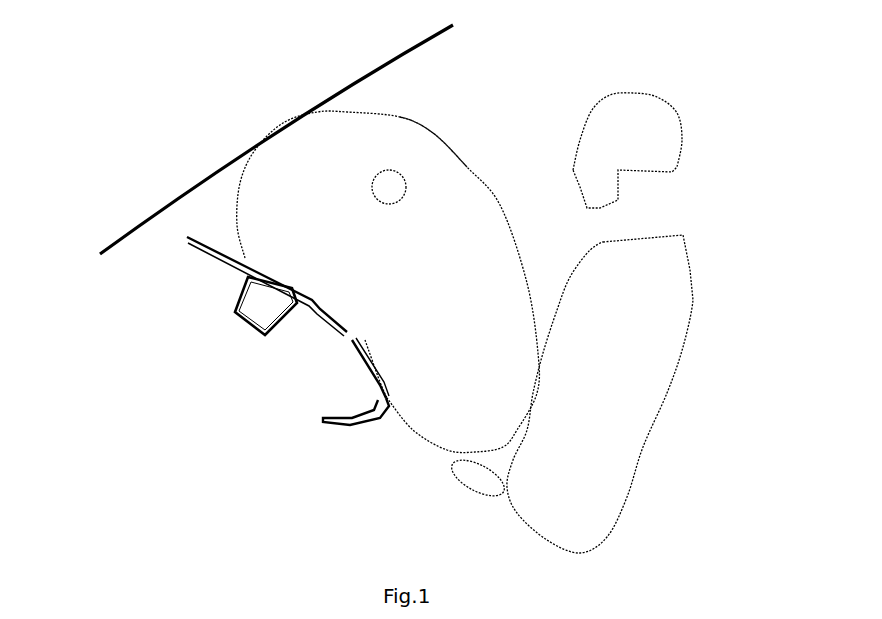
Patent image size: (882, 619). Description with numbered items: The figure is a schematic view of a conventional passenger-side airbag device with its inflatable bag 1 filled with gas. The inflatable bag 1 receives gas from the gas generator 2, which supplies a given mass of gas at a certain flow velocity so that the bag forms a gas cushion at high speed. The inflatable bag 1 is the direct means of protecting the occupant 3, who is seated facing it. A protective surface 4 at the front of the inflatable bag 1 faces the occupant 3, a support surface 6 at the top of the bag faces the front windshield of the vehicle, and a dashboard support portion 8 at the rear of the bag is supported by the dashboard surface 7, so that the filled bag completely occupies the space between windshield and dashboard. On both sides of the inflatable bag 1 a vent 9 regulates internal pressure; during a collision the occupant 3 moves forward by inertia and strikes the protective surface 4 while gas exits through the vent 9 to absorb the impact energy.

The inflatable bag 1 is at (343, 124).
The gas generator 2 is at (258, 305).
The occupant 3 is at (593, 338).
The protective surface 4 is at (430, 133).
The support surface 6 is at (257, 160).
The dashboard surface 7 is at (368, 412).
The dashboard support portion 8 is at (345, 335).
The vent 9 is at (394, 181).